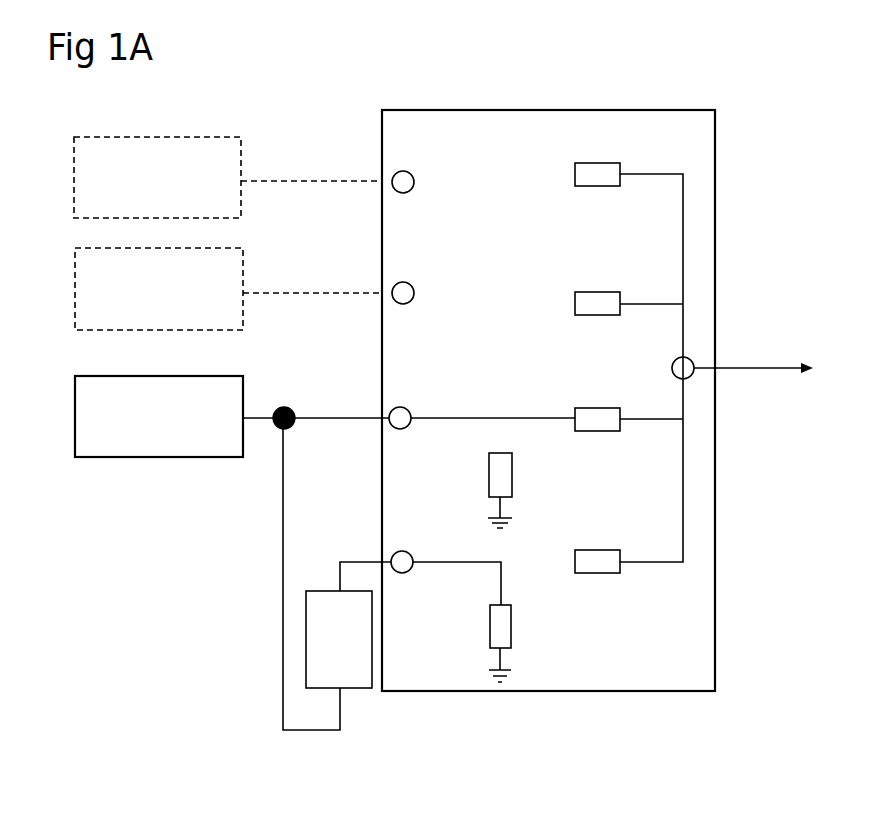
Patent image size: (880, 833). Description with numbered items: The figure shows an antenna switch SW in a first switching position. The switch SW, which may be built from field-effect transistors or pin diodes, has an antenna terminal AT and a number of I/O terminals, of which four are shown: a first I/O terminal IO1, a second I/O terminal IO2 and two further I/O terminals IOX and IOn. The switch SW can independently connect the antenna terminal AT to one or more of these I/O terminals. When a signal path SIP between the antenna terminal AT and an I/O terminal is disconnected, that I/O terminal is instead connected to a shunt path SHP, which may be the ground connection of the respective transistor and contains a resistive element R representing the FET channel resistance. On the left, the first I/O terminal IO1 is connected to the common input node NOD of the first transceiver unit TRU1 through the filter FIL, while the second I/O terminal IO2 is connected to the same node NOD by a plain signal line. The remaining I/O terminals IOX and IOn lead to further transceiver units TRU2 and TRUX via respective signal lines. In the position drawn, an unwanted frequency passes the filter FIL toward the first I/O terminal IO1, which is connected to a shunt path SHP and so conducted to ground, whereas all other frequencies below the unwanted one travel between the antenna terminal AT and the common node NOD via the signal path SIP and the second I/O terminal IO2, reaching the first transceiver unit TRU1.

The switch SW is at (340, 88).
The transceiver unit TRUX is at (228, 177).
The transceiver unit TRU2 is at (228, 289).
The first transceiver unit TRU1 is at (232, 416).
The common input node NOD is at (281, 433).
The I/O terminal IOn is at (413, 189).
The I/O terminal IOX is at (385, 293).
The second I/O terminal IO2 is at (387, 413).
The first I/O terminal IO1 is at (394, 553).
The signal path SIP is at (506, 418).
The antenna terminal AT is at (695, 374).
The shunt path SHP is at (505, 583).
The resistive element R is at (500, 463).
The filter FIL is at (358, 683).